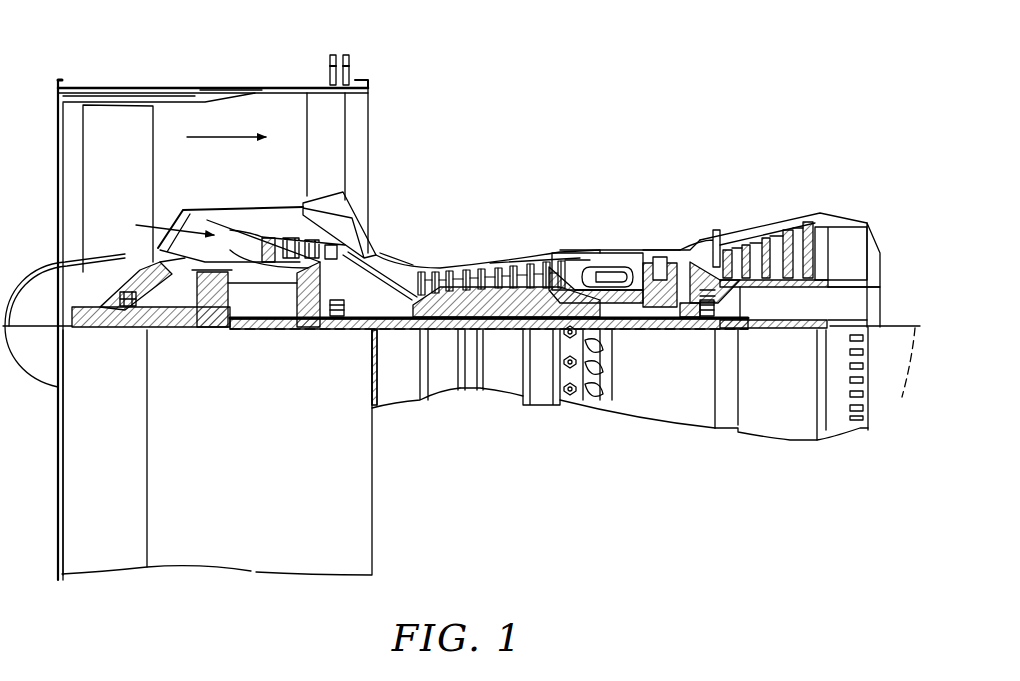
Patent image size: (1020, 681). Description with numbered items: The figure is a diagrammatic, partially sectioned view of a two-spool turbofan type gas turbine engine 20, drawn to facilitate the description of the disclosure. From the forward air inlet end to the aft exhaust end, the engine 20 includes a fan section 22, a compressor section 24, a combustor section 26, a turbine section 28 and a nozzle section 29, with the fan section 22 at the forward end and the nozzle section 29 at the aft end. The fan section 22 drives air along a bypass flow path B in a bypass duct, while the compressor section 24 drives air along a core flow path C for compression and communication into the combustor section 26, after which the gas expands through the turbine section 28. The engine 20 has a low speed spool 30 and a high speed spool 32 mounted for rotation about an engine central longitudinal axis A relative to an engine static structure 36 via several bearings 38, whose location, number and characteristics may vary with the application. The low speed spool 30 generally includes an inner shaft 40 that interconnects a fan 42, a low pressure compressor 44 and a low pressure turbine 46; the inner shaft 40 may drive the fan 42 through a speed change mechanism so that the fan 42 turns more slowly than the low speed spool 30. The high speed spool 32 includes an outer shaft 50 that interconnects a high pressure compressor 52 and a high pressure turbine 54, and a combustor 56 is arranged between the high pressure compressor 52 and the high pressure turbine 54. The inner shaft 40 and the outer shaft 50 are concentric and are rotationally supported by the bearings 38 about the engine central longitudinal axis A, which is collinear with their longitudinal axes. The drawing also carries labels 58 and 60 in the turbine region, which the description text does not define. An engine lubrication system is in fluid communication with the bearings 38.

The gas turbine engine 20 is at (620, 84).
The fan section 22 is at (50, 70).
The compressor section 24 is at (250, 167).
The combustor section 26 is at (602, 165).
The turbine section 28 is at (832, 165).
The nozzle section 29 is at (882, 245).
The low speed spool 30 is at (503, 332).
The high speed spool 32 is at (543, 267).
The engine static structure 36 is at (542, 402).
The bearings 38 is at (125, 330).
The inner shaft 40 is at (400, 330).
The fan 42 is at (134, 175).
The low pressure compressor 44 is at (313, 240).
The low pressure turbine 46 is at (768, 215).
The outer shaft 50 is at (625, 320).
The high pressure compressor 52 is at (487, 300).
The high pressure turbine 54 is at (662, 253).
The combustor 56 is at (607, 277).
The mid-turbine frame 58 is at (710, 235).
The airfoils / vanes 60 is at (737, 327).
The engine central longitudinal axis A is at (904, 380).
The bypass flow path B is at (226, 125).
The core flow path C is at (165, 225).